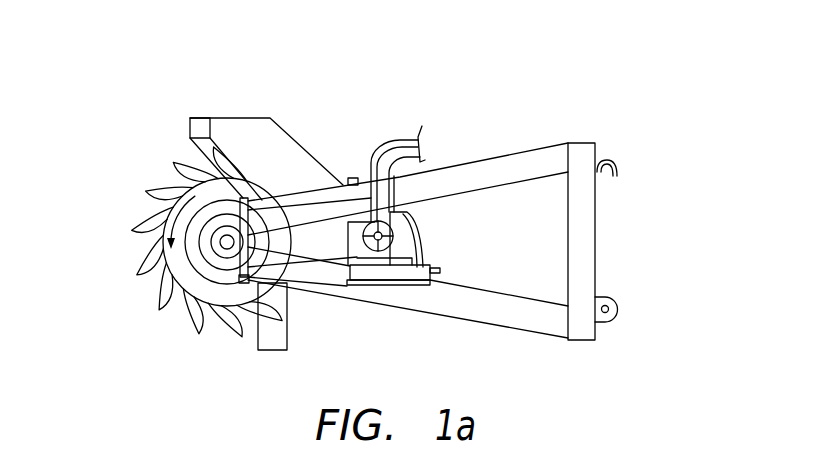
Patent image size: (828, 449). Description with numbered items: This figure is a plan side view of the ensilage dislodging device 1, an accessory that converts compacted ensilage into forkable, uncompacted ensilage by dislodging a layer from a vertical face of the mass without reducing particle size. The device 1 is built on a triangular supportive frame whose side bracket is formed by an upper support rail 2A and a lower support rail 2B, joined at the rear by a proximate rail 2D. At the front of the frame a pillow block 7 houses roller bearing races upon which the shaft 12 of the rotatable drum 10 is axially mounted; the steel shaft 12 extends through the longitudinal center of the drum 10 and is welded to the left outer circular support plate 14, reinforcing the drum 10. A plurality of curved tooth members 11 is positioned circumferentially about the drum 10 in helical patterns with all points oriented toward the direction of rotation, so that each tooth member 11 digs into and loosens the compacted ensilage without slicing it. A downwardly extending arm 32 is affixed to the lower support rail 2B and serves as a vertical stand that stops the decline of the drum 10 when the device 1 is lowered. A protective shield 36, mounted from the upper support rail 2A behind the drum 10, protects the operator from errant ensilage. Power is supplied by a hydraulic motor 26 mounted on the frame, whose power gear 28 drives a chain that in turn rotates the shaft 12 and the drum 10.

The ensilage dislodging device 1 is at (664, 98).
The upper support rail 2A is at (523, 152).
The lower support rail 2B is at (490, 317).
The proximate rail 2D is at (583, 233).
The pillow block 7 is at (241, 279).
The rotatable drum 10 is at (152, 247).
The curved tooth members 11 is at (142, 222).
The shaft 12 is at (220, 251).
The left outer circular support plate 14 is at (188, 260).
The hydraulic motor 26 is at (413, 237).
The power gear 28 is at (398, 249).
The downwardly extending arm 32 is at (281, 323).
The protective shield 36 is at (272, 143).